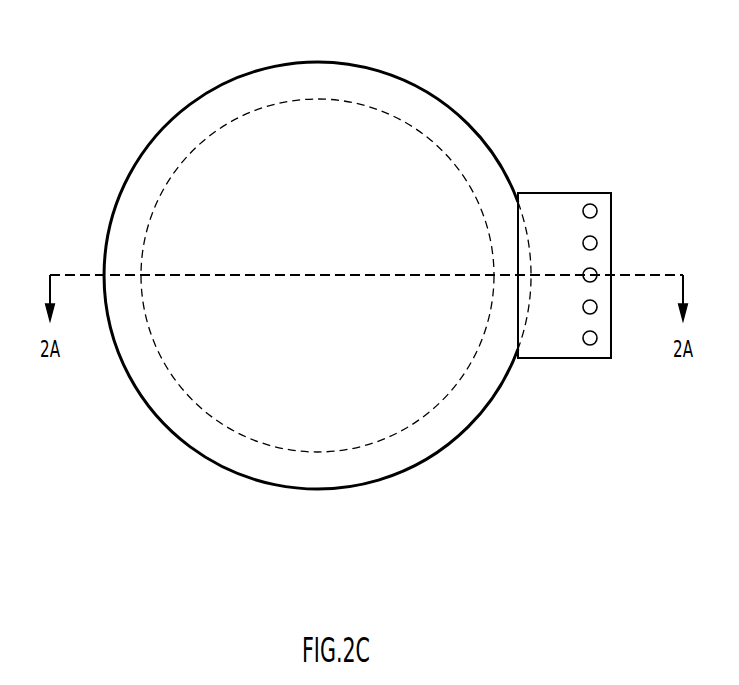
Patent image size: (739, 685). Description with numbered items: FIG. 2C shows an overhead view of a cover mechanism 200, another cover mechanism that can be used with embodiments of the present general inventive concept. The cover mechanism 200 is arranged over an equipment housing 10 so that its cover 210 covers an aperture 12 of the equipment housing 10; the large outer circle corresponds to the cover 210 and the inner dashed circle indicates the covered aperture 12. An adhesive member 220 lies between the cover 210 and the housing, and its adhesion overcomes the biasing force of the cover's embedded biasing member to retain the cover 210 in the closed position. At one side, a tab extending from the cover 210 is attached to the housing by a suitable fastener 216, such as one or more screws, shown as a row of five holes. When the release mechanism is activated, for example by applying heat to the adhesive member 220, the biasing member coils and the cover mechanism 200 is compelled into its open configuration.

The cover mechanism 200 is at (564, 63).
The cover 210 is at (145, 380).
The equipment housing 10 is at (438, 97).
The aperture 12 is at (277, 118).
The adhesive member 220 is at (440, 133).
The fastener 216 is at (590, 204).